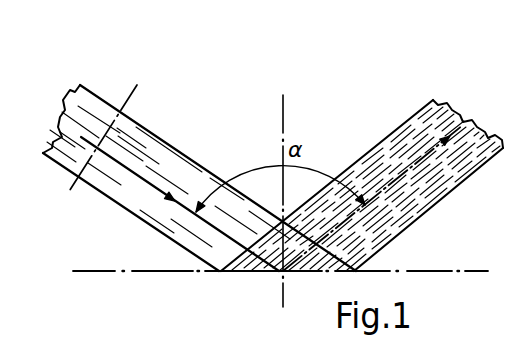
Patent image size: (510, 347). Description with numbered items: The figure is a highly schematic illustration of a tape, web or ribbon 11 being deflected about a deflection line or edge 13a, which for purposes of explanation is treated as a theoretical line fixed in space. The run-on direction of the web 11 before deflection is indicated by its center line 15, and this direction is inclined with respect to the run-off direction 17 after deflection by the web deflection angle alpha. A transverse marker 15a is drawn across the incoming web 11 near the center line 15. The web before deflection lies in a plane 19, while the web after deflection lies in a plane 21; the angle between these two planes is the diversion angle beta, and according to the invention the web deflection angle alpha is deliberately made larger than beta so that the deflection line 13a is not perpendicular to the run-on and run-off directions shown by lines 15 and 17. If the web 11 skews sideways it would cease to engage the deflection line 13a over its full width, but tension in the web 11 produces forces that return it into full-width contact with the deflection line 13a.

The web 11 is at (143, 127).
The deflection line 13a is at (153, 273).
The center line 15 is at (125, 168).
The cross-section plane of incident beam 15a is at (85, 168).
The run-off direction 17 is at (413, 168).
The plane of the web before deflection 19 is at (102, 109).
The plane of the web after deflection 21 is at (425, 107).